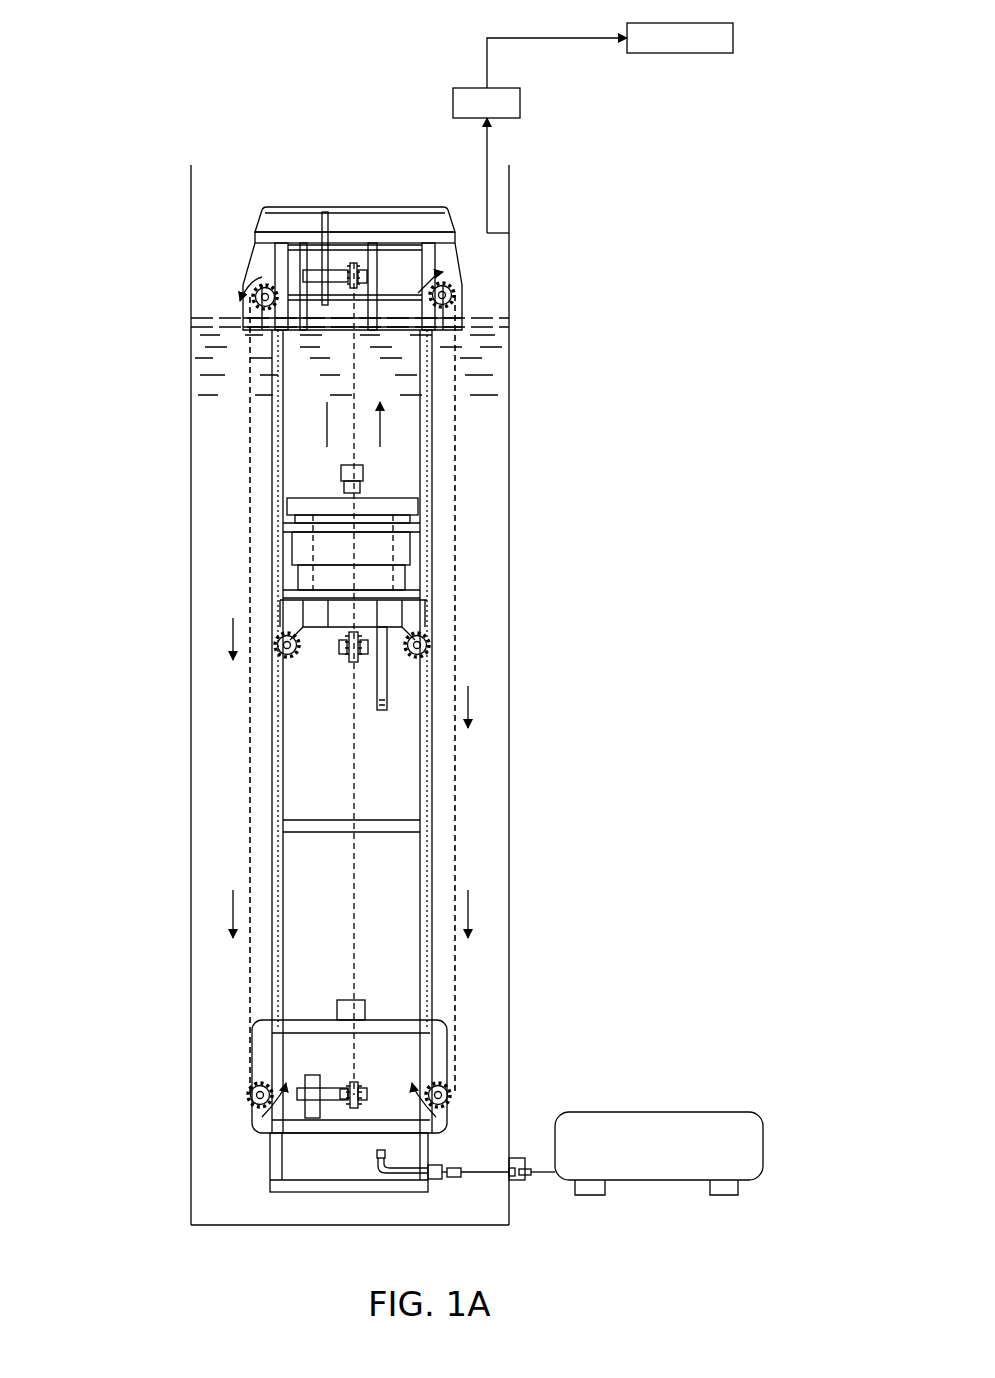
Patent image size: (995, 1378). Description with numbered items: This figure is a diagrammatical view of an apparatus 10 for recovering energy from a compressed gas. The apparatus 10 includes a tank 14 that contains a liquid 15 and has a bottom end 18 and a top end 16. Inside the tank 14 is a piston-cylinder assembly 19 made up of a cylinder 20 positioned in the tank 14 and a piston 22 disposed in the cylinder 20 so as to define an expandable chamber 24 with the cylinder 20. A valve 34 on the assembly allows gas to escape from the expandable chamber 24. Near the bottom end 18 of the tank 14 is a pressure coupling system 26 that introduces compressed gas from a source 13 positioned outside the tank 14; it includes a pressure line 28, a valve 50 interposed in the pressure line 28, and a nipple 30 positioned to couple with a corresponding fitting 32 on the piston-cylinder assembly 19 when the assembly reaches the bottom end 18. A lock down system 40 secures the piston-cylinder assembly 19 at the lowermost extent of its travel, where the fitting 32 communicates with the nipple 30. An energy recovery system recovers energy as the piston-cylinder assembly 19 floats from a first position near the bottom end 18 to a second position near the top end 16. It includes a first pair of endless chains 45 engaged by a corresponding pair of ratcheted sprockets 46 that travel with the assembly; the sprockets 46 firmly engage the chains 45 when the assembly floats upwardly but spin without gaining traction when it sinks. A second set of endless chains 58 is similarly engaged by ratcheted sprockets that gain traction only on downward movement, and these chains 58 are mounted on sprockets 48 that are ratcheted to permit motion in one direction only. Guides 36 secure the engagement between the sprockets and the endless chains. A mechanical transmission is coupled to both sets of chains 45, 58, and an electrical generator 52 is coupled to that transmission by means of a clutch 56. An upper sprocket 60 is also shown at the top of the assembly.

The apparatus 10 is at (150, 92).
The source 13 is at (646, 1113).
The tank 14 is at (155, 468).
The liquid 15 is at (205, 515).
The top end 16 is at (191, 186).
The bottom end 18 is at (191, 1207).
The piston-cylinder assembly 19 is at (468, 506).
The cylinder 20 is at (400, 548).
The piston 22 is at (307, 577).
The expandable chamber 24 is at (312, 556).
The pressure coupling system 26 is at (310, 1170).
The pressure line 28 is at (530, 1180).
The nipple 30 is at (375, 1150).
The fitting 32 is at (383, 712).
The valve 34 is at (345, 477).
The guides 36 is at (420, 774).
The lock down system 40 is at (328, 985).
The first pair of endless chains 45 is at (458, 430).
The sprockets 46 is at (432, 645).
The sprockets 48 is at (352, 266).
The valve 50 is at (518, 1158).
The electrical generator 52 is at (678, 53).
The clutch 56 is at (453, 103).
The second set of endless chains 58 is at (358, 320).
The upper sprocket 60 is at (452, 292).